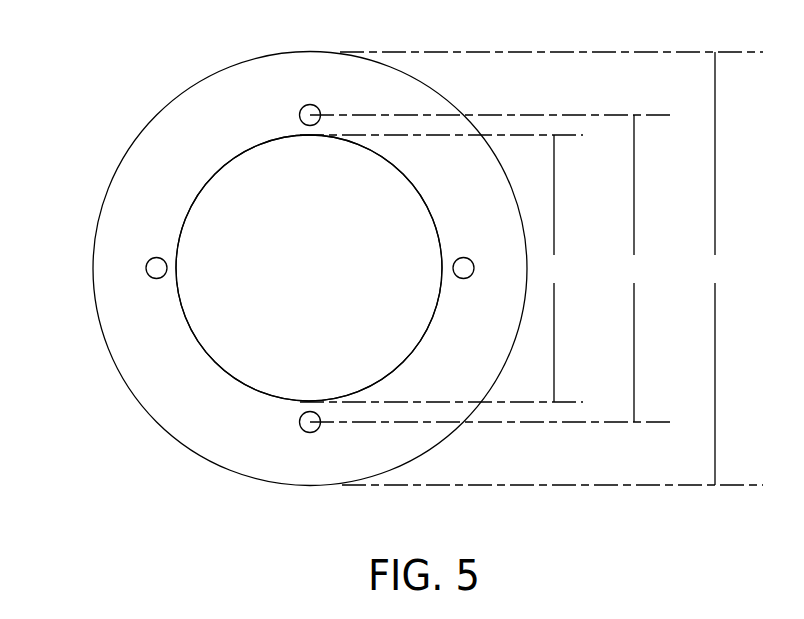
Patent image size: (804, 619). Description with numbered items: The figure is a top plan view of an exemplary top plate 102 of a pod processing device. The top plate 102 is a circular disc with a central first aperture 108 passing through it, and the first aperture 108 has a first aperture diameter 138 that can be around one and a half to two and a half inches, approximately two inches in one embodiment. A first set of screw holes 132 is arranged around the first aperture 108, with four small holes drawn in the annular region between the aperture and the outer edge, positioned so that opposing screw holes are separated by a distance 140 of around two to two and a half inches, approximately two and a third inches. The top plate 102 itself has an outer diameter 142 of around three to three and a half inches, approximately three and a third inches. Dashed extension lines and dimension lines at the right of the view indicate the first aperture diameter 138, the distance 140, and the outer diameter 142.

The top plate 102 is at (107, 62).
The first aperture 108 is at (229, 246).
The first set of screw holes 132 is at (302, 104).
The first aperture diameter 138 is at (443, 268).
The distance 140 is at (492, 268).
The outer diameter 142 is at (551, 268).